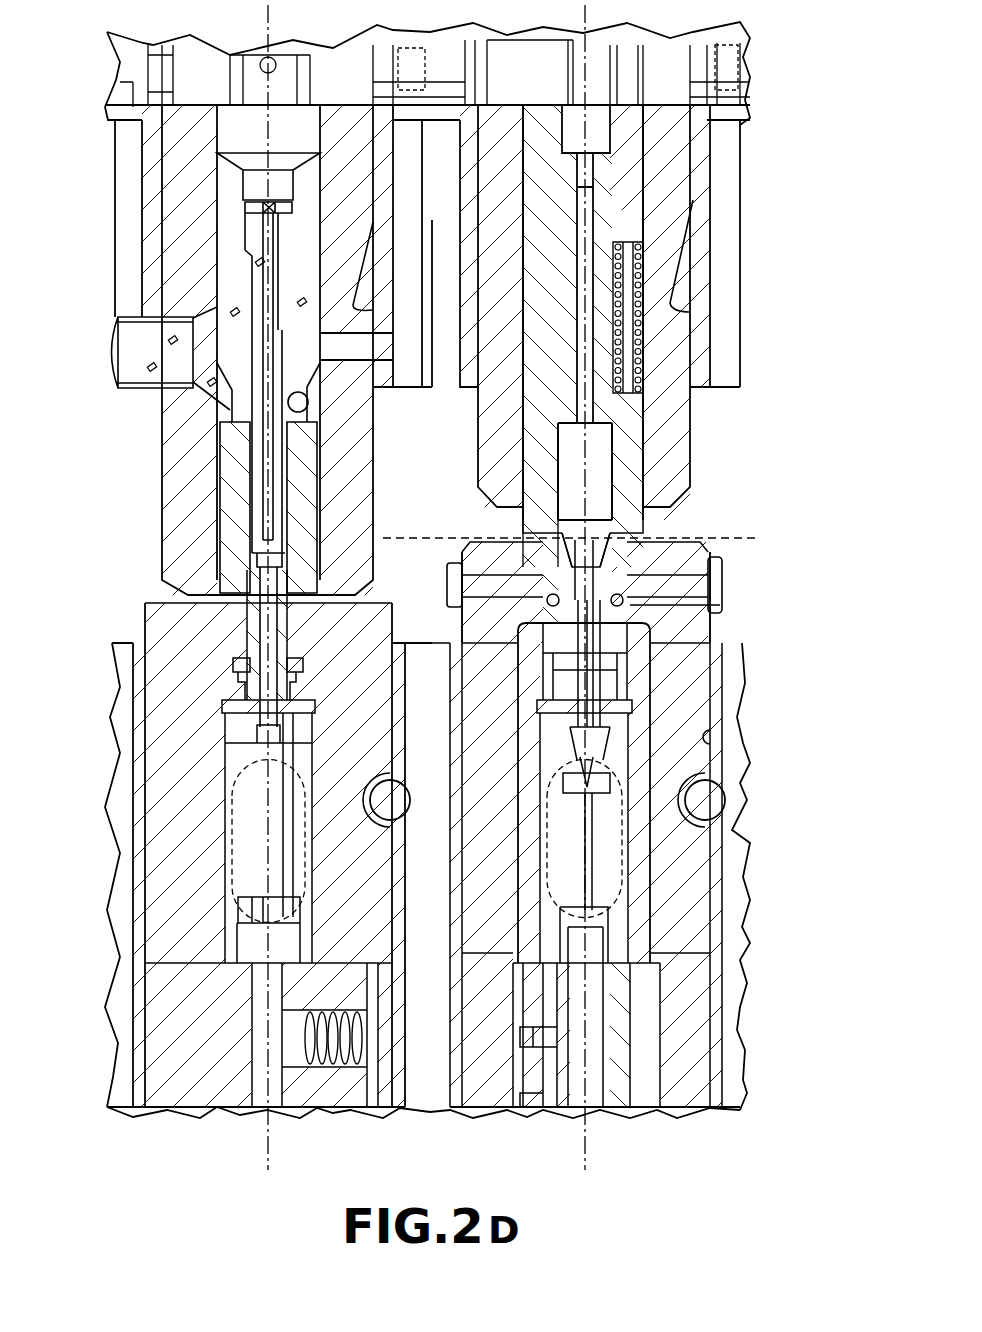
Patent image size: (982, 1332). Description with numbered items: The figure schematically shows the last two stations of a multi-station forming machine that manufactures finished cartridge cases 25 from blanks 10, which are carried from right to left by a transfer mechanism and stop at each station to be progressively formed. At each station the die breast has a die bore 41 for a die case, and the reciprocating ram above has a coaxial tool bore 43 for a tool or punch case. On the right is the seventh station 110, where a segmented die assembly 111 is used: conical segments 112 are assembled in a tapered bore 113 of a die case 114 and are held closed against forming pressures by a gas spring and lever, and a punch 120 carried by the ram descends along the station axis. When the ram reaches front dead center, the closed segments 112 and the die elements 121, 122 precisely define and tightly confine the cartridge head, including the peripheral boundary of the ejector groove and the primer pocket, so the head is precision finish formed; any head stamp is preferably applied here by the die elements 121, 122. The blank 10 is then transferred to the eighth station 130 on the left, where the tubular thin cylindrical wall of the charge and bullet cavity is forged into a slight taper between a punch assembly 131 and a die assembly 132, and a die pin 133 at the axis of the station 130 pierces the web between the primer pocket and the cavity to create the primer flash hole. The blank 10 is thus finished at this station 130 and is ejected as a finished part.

The blank 10 is at (640, 573).
The cartridge case 25 is at (243, 533).
The die bore 41 is at (140, 780).
The tool bore 43 is at (157, 258).
The seventh station 110 is at (586, 1150).
The segmented die assembly 111 is at (640, 605).
The conical segments 112 is at (617, 593).
The tapered bore 113 is at (530, 555).
The die case 114 is at (697, 557).
The piston 120 is at (610, 480).
The die element 121 is at (603, 636).
The die element 122 is at (593, 643).
The eighth station 130 is at (266, 1152).
The punch assembly 131 is at (257, 450).
The die assembly 132 is at (247, 637).
The die pin 133 is at (257, 633).